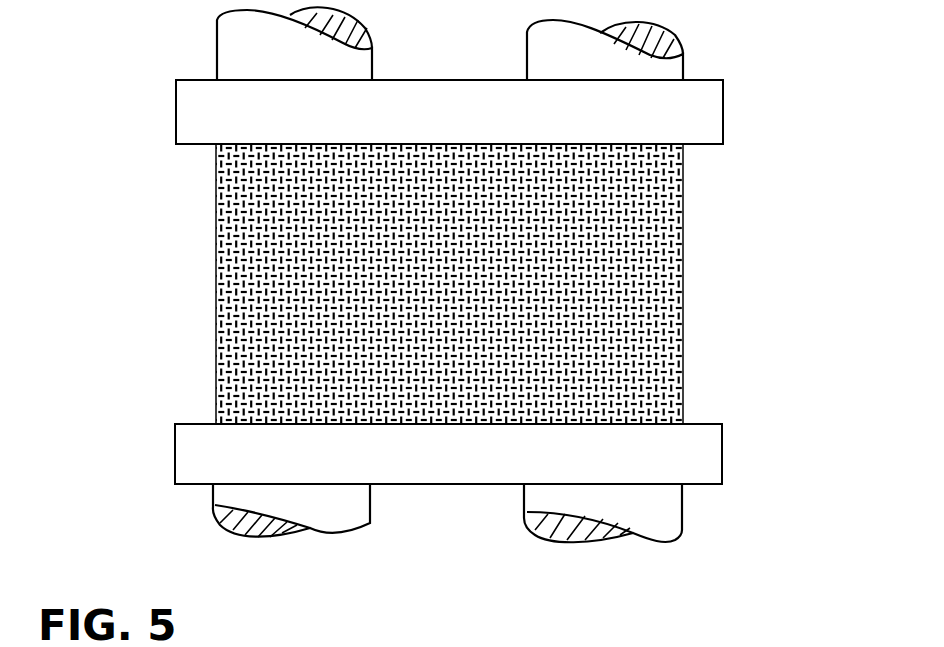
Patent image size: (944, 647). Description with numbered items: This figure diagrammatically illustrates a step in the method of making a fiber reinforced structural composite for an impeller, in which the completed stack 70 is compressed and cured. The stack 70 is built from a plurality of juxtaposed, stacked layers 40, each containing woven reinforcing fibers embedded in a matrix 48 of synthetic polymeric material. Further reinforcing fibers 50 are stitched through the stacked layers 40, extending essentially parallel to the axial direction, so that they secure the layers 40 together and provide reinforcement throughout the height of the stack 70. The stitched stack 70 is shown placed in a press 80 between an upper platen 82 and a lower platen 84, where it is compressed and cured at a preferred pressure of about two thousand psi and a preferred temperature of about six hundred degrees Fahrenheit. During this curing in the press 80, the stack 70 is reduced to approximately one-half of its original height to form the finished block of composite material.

The layers 40 is at (212, 252).
The matrix 48 is at (673, 300).
The further reinforcing fibers 50 is at (217, 303).
The stack 70 is at (688, 215).
The press 80 is at (490, 469).
The platen 82 is at (713, 117).
The platen 84 is at (707, 463).